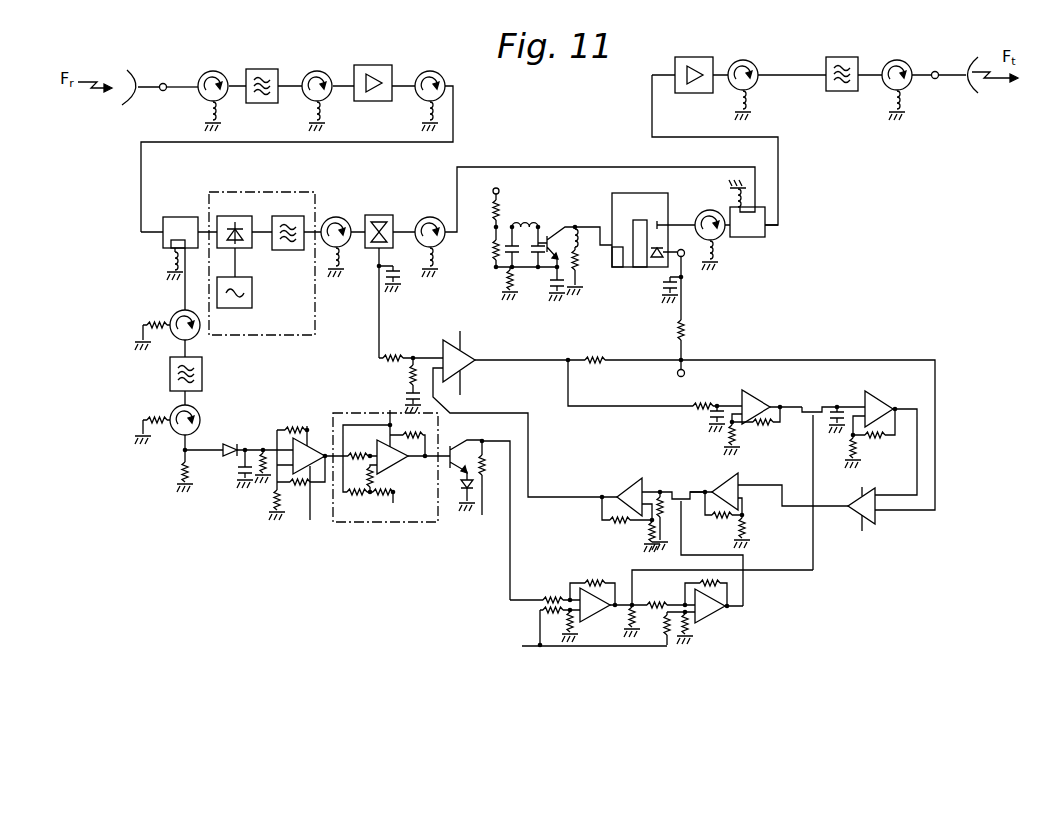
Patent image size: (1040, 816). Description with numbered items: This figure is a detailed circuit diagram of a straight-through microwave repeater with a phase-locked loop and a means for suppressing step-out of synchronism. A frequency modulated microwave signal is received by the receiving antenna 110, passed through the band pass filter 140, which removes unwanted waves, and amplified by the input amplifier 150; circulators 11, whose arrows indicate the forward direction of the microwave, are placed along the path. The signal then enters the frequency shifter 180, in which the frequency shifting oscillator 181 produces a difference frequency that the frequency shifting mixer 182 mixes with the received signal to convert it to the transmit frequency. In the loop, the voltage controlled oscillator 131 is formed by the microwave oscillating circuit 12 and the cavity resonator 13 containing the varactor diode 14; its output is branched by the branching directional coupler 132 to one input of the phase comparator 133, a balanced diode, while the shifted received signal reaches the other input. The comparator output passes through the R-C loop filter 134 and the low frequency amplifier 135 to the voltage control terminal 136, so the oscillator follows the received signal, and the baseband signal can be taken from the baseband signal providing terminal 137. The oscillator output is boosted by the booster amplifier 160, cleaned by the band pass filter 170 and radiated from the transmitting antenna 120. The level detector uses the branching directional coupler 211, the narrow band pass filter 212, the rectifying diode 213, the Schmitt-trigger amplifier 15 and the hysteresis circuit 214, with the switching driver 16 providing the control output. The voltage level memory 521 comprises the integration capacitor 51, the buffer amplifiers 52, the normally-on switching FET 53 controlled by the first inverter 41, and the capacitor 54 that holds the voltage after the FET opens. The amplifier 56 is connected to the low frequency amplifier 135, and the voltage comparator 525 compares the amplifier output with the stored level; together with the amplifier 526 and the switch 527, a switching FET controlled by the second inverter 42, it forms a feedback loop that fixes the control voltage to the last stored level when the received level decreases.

The circulator 11 is at (212, 70).
The microwave oscillating circuit 12 is at (540, 223).
The cavity resonator 13 is at (634, 196).
The varactor diode 14 is at (662, 259).
The amplifier 15 is at (289, 415).
The switching driver 16 is at (463, 439).
The first inverter 41 is at (601, 616).
The second inverter 42 is at (718, 617).
The integration capacitor 51 is at (708, 416).
The buffer amplifiers 52 is at (758, 392).
The switching FET 53 is at (812, 400).
The capacitor 54 is at (839, 429).
The amplifier 56 is at (627, 481).
The receiving antenna 110 is at (135, 68).
The transmitting antenna 120 is at (968, 52).
The voltage controlled oscillator 131 is at (552, 160).
The branching directional coupler 132 is at (748, 237).
The phase comparator 133 is at (380, 214).
The loop filter 134 is at (406, 353).
The low frequency amplifier 135 is at (471, 350).
The voltage control terminal 136 is at (685, 257).
The baseband signal providing terminal 137 is at (686, 375).
The band pass filter 140 is at (265, 68).
The input amplifier 150 is at (375, 64).
The booster amplifier 160 is at (693, 55).
The band pass filter 170 is at (842, 55).
The frequency shifter 180 is at (275, 193).
The frequency shifting oscillator 181 is at (252, 292).
The frequency shifting mixer 182 is at (222, 220).
The branching directional coupler 211 is at (179, 215).
The band pass filter 212 is at (169, 380).
The rectifying diode 213 is at (232, 436).
The hysteresis circuit 214 is at (339, 412).
The voltage level memory 521 is at (702, 341).
The voltage comparator 525 is at (854, 514).
The amplifier 526 is at (740, 474).
The switch 527 is at (681, 488).